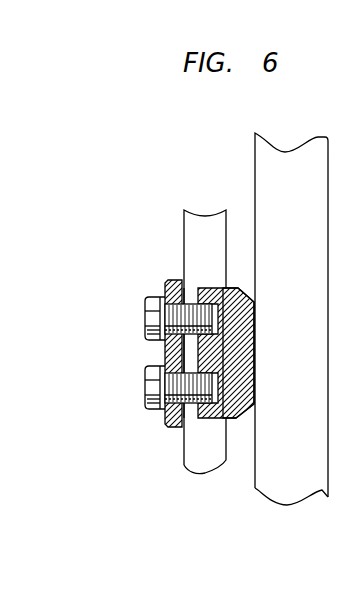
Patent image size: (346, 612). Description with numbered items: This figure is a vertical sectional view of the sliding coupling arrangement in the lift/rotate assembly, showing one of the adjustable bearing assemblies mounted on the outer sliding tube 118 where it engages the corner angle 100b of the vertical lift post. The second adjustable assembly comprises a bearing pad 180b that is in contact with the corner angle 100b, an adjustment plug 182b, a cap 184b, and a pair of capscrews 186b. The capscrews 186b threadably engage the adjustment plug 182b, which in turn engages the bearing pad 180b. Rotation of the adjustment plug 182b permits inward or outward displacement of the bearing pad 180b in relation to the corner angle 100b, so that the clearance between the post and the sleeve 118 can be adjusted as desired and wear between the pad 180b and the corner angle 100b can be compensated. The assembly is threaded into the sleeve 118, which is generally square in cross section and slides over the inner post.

The corner angle 100b is at (267, 163).
The outer sliding tube 118 is at (193, 239).
The bearing pad 180b is at (173, 360).
The adjustment plug 182b is at (233, 416).
The cap 184b is at (168, 426).
The capscrews 186b is at (152, 320).